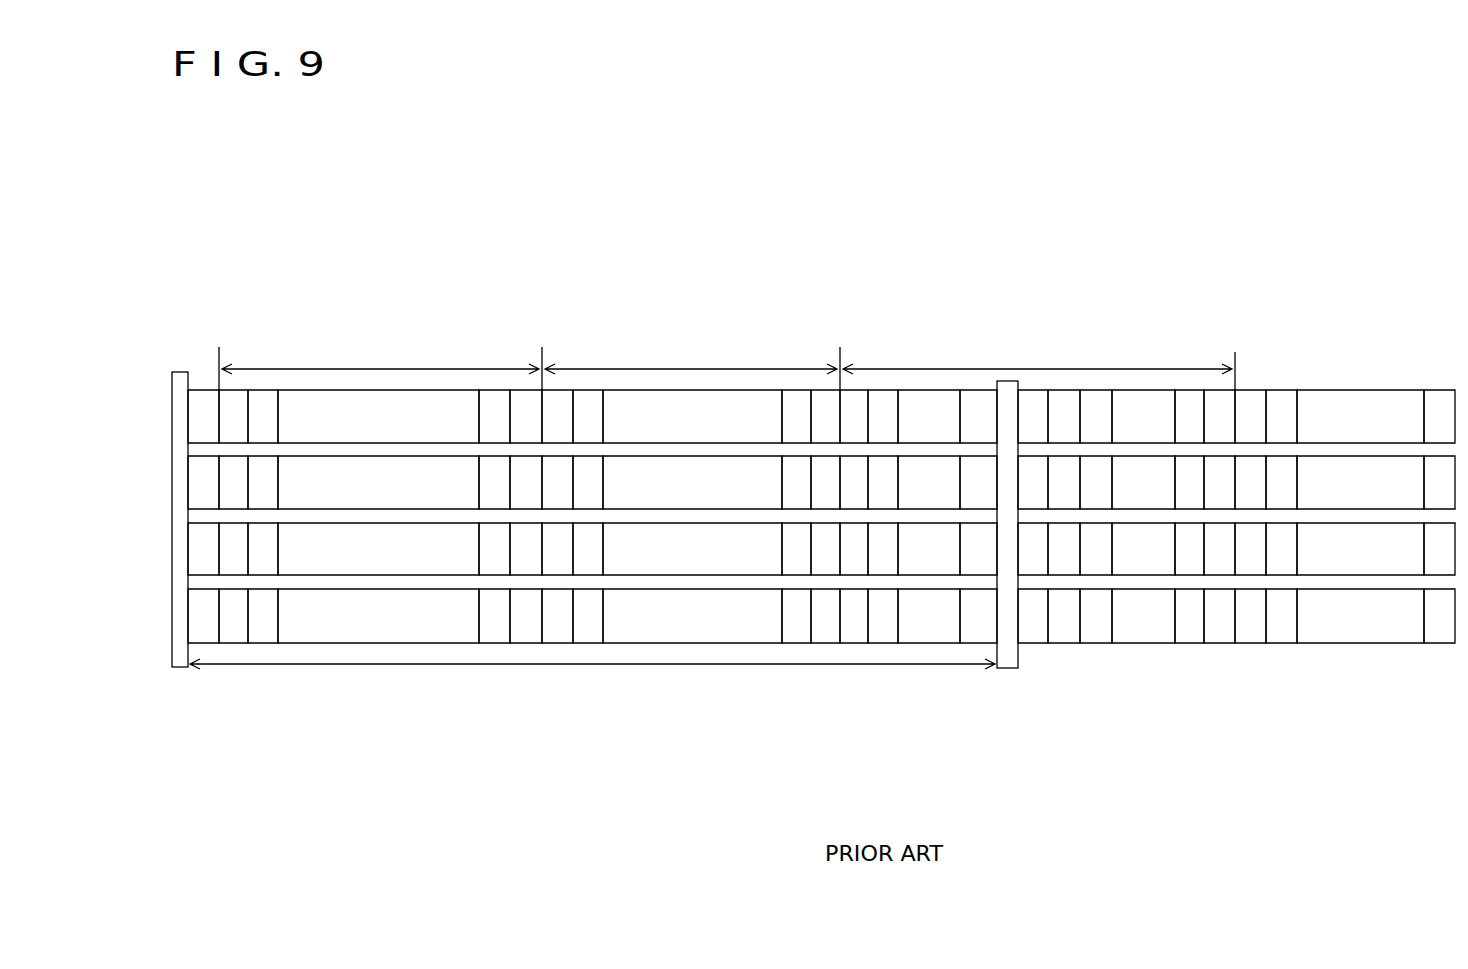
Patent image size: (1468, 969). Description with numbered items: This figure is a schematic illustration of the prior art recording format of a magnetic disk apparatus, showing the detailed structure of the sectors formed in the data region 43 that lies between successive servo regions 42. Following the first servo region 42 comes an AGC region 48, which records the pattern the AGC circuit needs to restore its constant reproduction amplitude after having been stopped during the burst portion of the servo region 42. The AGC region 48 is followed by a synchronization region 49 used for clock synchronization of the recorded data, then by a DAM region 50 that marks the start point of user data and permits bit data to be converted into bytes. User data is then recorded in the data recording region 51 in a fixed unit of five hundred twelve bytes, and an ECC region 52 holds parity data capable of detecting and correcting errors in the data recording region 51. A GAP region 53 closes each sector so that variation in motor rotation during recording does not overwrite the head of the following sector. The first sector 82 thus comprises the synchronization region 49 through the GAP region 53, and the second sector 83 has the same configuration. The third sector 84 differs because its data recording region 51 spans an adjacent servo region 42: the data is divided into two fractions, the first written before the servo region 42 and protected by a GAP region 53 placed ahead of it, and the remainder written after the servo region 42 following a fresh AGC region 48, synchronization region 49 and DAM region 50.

The servo region 42 is at (181, 669).
The data region 43 is at (592, 679).
The AGC region 48 is at (201, 397).
The synchronization region 49 is at (234, 402).
The DAM region 50 is at (263, 402).
The data recording region 51 is at (851, 516).
The ECC region 52 is at (493, 405).
The GAP region 53 is at (516, 397).
The first sector 82 is at (380, 367).
The second sector 83 is at (692, 367).
The third sector 84 is at (1039, 367).